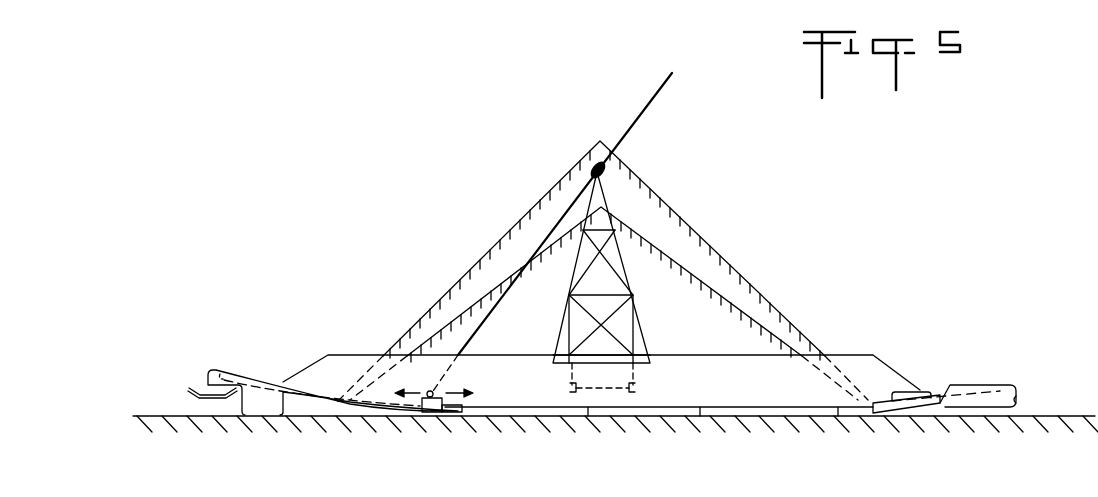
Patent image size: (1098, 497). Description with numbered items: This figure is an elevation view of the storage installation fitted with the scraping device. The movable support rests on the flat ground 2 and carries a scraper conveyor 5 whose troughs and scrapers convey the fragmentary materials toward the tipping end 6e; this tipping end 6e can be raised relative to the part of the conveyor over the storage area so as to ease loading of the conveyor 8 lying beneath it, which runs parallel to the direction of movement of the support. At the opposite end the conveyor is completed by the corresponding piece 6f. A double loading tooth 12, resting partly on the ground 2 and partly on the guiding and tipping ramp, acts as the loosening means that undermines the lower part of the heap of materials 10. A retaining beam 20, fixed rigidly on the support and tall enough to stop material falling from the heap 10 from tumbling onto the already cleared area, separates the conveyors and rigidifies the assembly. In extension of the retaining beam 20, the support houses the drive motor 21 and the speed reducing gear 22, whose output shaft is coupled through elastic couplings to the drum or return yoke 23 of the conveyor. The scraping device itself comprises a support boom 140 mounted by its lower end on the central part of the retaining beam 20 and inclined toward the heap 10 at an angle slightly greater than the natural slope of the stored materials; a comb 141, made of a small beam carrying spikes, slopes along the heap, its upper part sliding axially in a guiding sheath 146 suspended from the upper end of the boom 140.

The flat ground 2 is at (705, 421).
The scraper conveyor 5 is at (489, 417).
The tipping end 6e is at (216, 368).
The right ramp element 6f is at (1008, 386).
The conveyor 8 is at (187, 384).
The heap of materials 10 is at (700, 325).
The double loading tooth 12 is at (425, 413).
The retaining beam 20 is at (534, 352).
The drive motor 21 is at (922, 390).
The speed reducing gear 22 is at (965, 388).
The return yoke 23 is at (1015, 398).
The support boom 140 is at (603, 200).
The comb 141 is at (547, 218).
The guiding sheath 146 is at (612, 172).